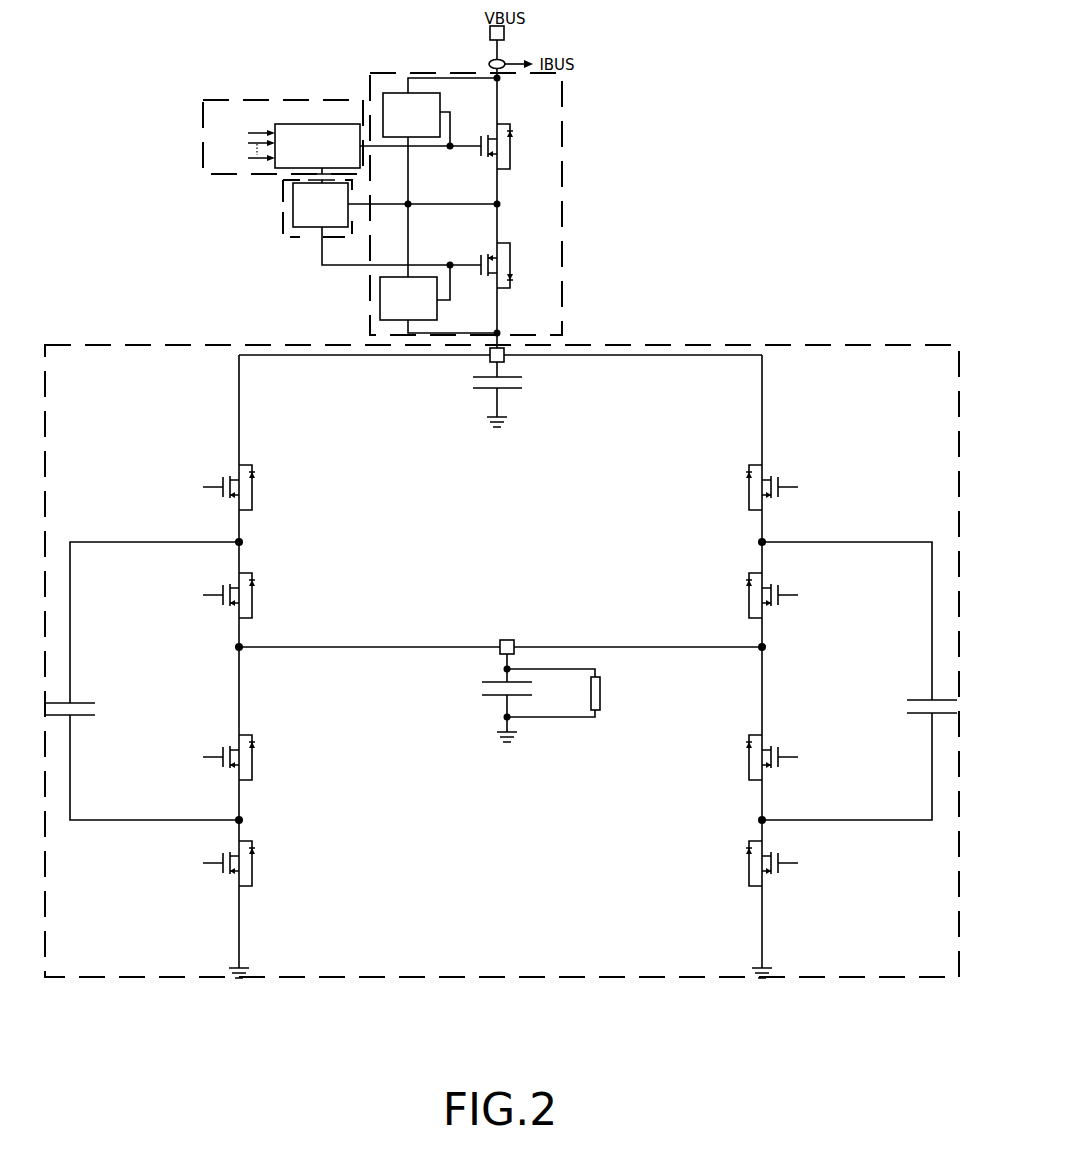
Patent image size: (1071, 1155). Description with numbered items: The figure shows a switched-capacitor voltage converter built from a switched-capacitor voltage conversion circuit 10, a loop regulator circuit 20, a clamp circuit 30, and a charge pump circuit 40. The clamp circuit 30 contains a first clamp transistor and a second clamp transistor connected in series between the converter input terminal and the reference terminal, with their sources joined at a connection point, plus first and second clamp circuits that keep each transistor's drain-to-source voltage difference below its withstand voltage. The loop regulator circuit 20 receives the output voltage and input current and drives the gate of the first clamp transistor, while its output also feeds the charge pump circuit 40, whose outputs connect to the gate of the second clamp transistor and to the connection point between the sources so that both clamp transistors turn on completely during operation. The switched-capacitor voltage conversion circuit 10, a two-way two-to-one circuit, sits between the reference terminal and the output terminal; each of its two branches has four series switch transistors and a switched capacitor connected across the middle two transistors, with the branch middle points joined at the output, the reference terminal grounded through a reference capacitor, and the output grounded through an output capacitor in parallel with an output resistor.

The switched-capacitor voltage conversion circuit 10 is at (745, 343).
The loop regulator circuit 20 is at (203, 113).
The clamp circuit 30 is at (563, 107).
The charge pump circuit 40 is at (308, 237).